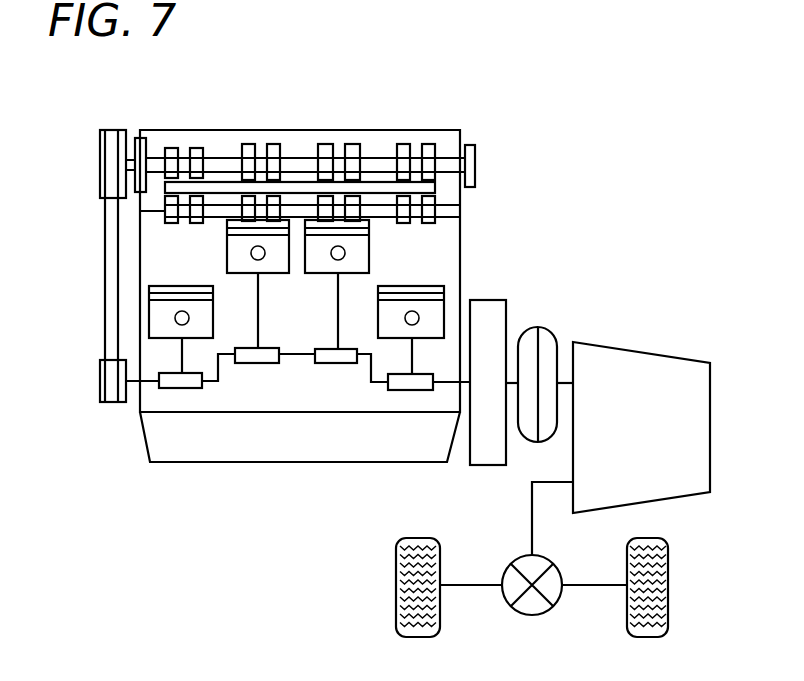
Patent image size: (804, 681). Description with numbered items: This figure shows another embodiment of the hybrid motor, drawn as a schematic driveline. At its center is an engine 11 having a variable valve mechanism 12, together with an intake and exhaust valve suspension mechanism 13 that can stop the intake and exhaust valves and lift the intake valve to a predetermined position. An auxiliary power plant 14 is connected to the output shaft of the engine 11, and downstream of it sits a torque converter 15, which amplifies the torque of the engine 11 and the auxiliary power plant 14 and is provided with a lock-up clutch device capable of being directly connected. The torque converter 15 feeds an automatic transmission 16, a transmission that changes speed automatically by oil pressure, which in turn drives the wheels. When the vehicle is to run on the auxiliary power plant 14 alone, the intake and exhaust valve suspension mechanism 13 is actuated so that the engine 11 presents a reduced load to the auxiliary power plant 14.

The engine 11 is at (302, 130).
The variable valve mechanism 12 is at (101, 150).
The intake and exhaust valve suspension mechanism 13 is at (372, 185).
The auxiliary power plant 14 is at (497, 300).
The torque converter 15 is at (547, 327).
The automatic transmission 16 is at (707, 392).